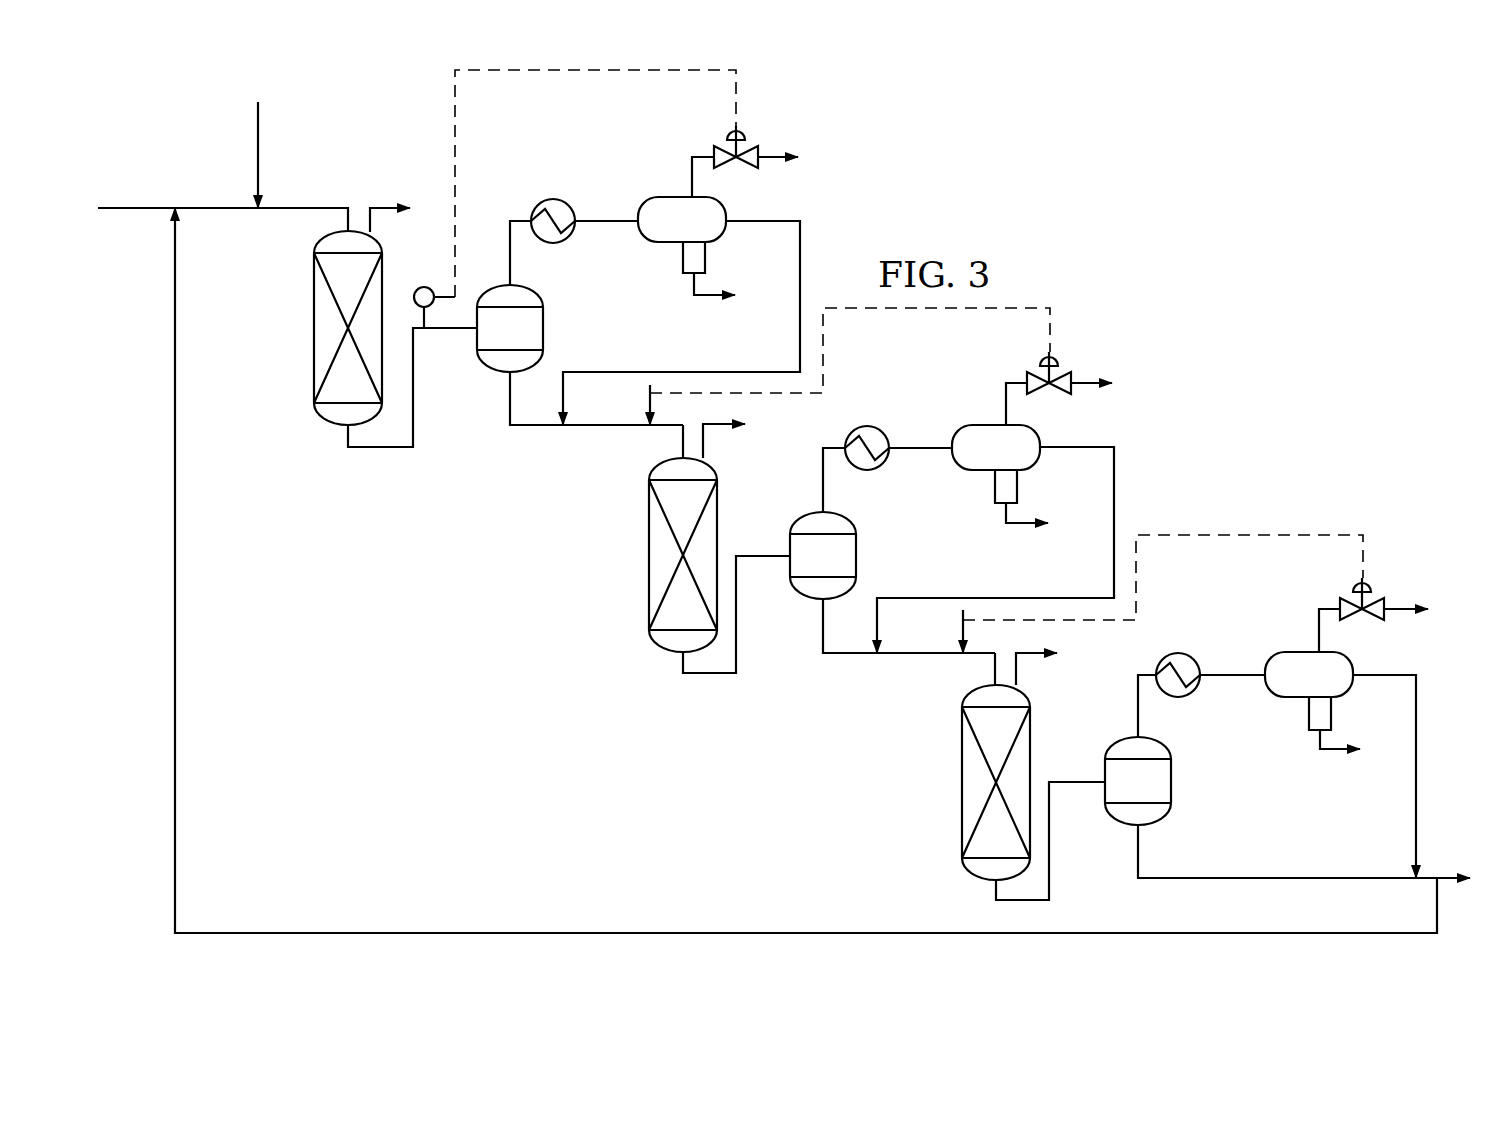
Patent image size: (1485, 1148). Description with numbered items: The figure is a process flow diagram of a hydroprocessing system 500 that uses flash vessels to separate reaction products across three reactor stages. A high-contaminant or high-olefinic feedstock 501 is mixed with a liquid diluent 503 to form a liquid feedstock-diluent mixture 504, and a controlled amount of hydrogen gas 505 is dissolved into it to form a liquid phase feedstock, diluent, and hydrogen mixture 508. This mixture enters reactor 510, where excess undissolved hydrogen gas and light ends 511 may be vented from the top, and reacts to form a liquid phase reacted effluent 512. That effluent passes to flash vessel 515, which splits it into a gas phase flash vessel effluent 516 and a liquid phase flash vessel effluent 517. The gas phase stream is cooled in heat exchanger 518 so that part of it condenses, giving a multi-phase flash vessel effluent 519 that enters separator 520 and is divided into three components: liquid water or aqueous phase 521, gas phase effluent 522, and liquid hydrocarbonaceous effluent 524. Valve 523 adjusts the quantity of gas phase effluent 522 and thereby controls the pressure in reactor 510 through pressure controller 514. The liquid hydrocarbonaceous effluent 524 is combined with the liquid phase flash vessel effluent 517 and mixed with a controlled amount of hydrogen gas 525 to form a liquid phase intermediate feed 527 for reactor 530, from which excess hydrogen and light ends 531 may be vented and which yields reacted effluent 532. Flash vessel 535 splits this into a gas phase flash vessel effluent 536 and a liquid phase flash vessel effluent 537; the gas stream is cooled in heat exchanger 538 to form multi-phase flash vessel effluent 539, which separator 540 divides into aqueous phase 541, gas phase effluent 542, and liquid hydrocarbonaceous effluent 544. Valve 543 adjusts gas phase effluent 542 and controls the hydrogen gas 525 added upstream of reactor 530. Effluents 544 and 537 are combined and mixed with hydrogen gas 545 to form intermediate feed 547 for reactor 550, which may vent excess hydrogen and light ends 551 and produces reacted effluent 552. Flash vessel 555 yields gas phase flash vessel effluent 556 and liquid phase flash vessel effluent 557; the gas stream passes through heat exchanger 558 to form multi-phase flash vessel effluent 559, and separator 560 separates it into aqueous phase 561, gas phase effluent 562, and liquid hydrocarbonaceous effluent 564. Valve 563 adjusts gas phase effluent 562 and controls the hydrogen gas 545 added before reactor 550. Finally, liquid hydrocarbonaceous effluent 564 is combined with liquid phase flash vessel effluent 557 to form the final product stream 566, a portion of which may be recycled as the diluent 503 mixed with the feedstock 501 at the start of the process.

The hydroprocessing system 500 is at (1117, 263).
The feedstock 501 is at (146, 208).
The liquid diluent 503 is at (806, 933).
The liquid feedstock-diluent mixture 504 is at (216, 208).
The hydrogen gas 505 is at (258, 136).
The liquid phase feedstock, diluent, and hydrogen mixture 508 is at (314, 208).
The reactor 510 is at (314, 330).
The excess undissolved hydrogen gas and light ends 511 is at (386, 208).
The reacted effluent 512 is at (348, 435).
The pressure controller 514 is at (424, 285).
The flash vessel 515 is at (544, 320).
The gas phase flash vessel effluent 516 is at (514, 251).
The liquid phase flash vessel effluent 517 is at (508, 392).
The heat exchanger 518 is at (551, 200).
The multi-phase flash vessel effluent 519 is at (605, 223).
The separator 520 is at (666, 246).
The liquid water or aqueous phase 521 is at (712, 298).
The gas phase effluent 522 is at (692, 168).
The valve 523 is at (722, 142).
The liquid hydrocarbonaceous effluent 524 is at (758, 222).
The hydrogen gas 525 is at (648, 406).
The liquid phase intermediate feed 527 is at (683, 434).
The reactor 530 is at (652, 555).
The excess undissolved hydrogen gas and light ends 531 is at (704, 448).
The reacted effluent 532 is at (682, 666).
The flash vessel 535 is at (856, 545).
The gas phase flash vessel effluent 536 is at (824, 480).
The liquid phase flash vessel effluent 537 is at (824, 620).
The second heat exchanger 538 is at (865, 427).
The multi-phase flash vessel effluent 539 is at (917, 450).
The separator 540 is at (978, 473).
The liquid water or aqueous phase 541 is at (1046, 526).
The gas phase effluent 542 is at (1004, 394).
The valve 543 is at (1036, 368).
The liquid hydrocarbonaceous effluent 544 is at (1074, 450).
The hydrogen gas 545 is at (964, 632).
The liquid phase intermediate feed 547 is at (995, 662).
The reactor 550 is at (964, 782).
The excess undissolved hydrogen gas and light ends 551 is at (1018, 674).
The reacted effluent 552 is at (996, 892).
The flash vessel 555 is at (1170, 792).
The gas phase flash vessel effluent 556 is at (1138, 706).
The liquid phase flash vessel effluent 557 is at (1138, 845).
The third heat exchanger 558 is at (1177, 654).
The multi-phase flash vessel effluent 559 is at (1235, 677).
The separator 560 is at (1296, 702).
The liquid water or aqueous phase 561 is at (1360, 753).
The gas phase effluent 562 is at (1318, 619).
The valve 563 is at (1348, 595).
The liquid hydrocarbonaceous effluent 564 is at (1378, 677).
The final product stream 566 is at (1428, 878).